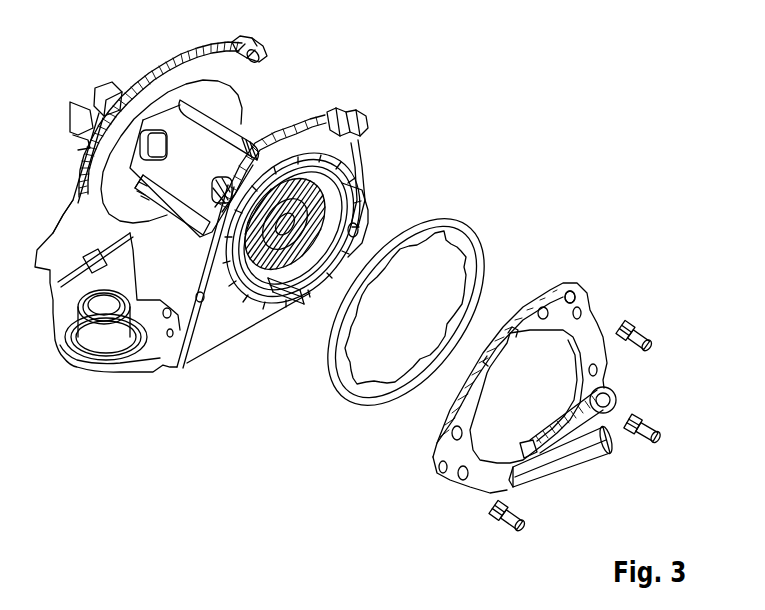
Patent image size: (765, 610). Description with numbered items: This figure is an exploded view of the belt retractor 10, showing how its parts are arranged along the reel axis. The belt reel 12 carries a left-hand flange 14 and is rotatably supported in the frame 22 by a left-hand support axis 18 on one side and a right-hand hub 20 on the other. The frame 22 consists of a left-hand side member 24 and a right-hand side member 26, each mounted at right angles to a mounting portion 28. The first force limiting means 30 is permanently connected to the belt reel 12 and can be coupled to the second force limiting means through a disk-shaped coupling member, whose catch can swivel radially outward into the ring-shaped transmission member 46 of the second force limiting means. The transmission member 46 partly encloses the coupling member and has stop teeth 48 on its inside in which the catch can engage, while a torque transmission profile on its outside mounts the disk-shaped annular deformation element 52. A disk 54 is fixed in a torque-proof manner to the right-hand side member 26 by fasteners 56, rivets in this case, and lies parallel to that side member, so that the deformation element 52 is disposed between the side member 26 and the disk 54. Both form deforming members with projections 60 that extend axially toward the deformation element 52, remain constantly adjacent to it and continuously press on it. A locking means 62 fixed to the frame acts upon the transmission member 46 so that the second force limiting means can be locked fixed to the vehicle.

The belt retractor 10 is at (576, 117).
The belt reel 12 is at (250, 135).
The left-hand flange 14 is at (178, 82).
The left-hand support axis 18 is at (100, 92).
The right-hand hub 20 is at (305, 285).
The frame 22 is at (70, 214).
The left-hand side member 24 is at (130, 98).
The right-hand side member 26 is at (345, 150).
The mounting portion 28 is at (55, 306).
The first force limiting means 30 is at (360, 206).
The transmission member 46 is at (352, 182).
The stop teeth 48 is at (390, 360).
The deformation element 52 is at (463, 236).
The disk 54 is at (600, 354).
The fasteners 56 is at (650, 340).
The projections 60 is at (598, 310).
The locking means 62 is at (625, 465).